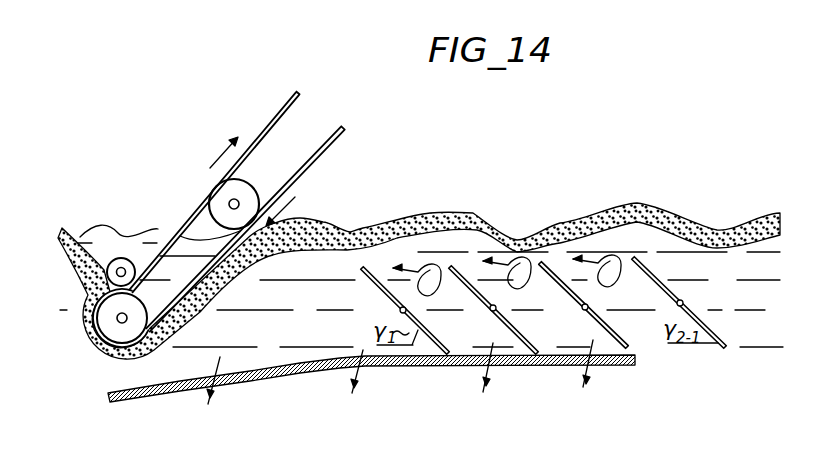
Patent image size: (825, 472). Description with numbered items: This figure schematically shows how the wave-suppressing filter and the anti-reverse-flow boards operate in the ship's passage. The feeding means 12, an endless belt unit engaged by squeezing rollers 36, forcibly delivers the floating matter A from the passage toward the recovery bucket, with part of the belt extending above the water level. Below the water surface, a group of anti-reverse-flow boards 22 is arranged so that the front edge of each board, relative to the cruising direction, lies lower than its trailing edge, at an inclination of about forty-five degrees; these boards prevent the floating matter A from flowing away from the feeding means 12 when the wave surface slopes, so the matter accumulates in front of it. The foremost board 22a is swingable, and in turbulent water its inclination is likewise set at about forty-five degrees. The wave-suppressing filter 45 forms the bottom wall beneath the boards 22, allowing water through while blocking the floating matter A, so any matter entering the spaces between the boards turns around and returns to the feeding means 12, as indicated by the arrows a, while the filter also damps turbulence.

The feeding means 12 is at (331, 153).
The squeezing roller 36 is at (121, 262).
The floating matter A is at (503, 224).
The arrows a is at (515, 285).
The anti-reverse-flow board 22 is at (447, 355).
The foremost board 22a is at (713, 348).
The wave-suppressing filter 45 is at (316, 368).